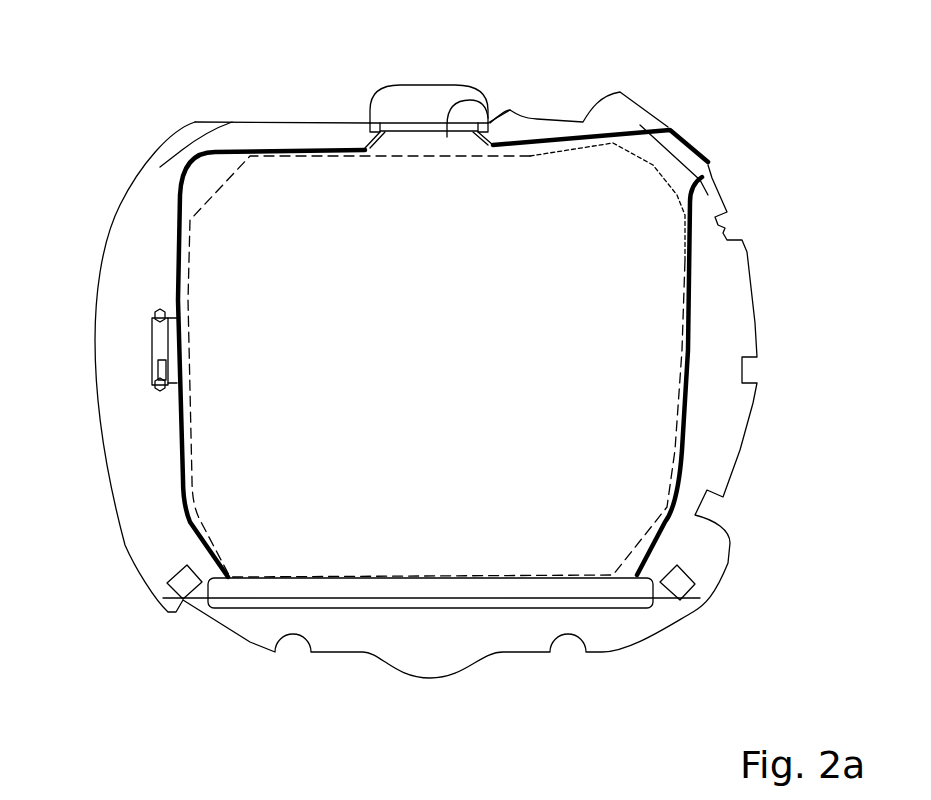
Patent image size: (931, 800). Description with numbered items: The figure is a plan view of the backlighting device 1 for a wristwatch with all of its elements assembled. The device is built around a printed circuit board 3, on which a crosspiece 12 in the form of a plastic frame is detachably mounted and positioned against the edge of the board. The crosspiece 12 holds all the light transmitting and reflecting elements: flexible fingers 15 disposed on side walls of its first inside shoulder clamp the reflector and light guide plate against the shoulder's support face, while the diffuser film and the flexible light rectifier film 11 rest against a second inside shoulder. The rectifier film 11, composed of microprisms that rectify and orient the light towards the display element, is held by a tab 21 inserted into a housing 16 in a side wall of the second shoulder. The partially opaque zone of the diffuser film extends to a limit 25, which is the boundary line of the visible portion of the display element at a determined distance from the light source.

The backlighting device 1 is at (160, 96).
The printed circuit board 3 is at (178, 145).
The flexible light rectifier film 11 is at (587, 565).
The crosspiece 12 is at (127, 229).
The flexible fingers 15 is at (170, 345).
The housing 16 is at (423, 103).
The tab 21 is at (507, 108).
The limit 25 is at (230, 171).